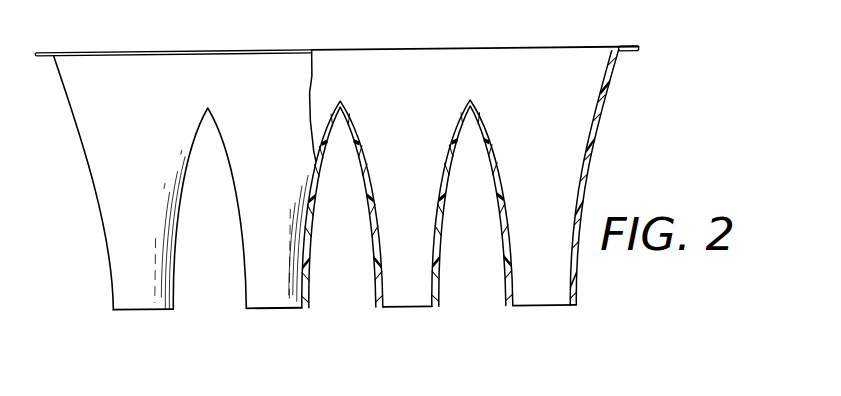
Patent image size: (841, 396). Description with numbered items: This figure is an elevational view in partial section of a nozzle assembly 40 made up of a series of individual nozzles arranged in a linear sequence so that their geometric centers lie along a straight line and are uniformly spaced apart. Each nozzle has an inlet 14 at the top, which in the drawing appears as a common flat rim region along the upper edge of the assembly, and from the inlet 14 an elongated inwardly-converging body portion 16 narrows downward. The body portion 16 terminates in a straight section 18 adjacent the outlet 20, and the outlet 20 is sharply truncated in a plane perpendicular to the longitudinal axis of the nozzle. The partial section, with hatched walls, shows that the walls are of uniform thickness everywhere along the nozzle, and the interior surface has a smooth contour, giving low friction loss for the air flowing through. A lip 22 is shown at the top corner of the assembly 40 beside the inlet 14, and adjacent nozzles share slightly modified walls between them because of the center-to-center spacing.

The inlet 14 is at (336, 50).
The inwardly-converging body portion 16 is at (283, 179).
The straight section 18 is at (595, 177).
The outlet 20 is at (544, 305).
The peripheral rim 22 is at (629, 48).
The nozzle assembly 40 is at (374, 155).